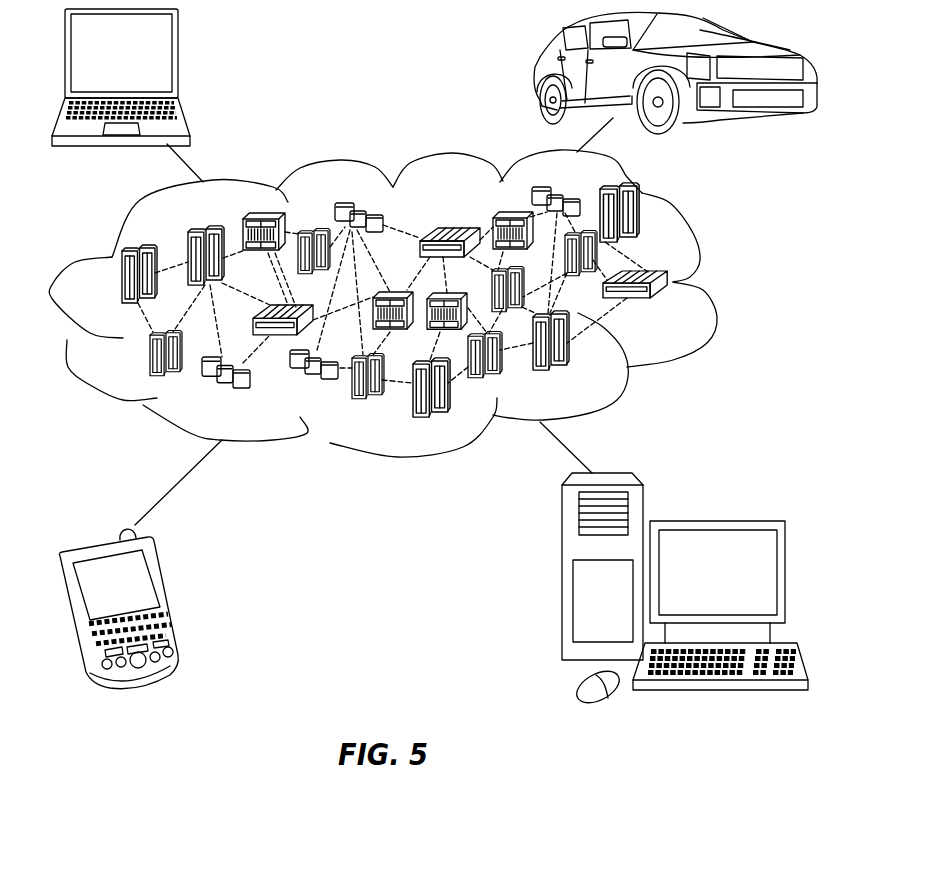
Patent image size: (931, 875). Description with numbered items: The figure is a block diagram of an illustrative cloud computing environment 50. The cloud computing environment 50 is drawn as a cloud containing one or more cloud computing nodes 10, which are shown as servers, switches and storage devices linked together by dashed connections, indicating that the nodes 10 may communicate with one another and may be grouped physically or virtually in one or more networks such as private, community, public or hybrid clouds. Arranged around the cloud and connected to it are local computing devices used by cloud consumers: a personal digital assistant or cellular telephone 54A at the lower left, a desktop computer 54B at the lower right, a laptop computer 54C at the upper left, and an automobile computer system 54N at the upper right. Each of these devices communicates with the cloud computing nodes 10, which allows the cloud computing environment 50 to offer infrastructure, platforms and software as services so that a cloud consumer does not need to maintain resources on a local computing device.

The cloud computing nodes 10 is at (672, 309).
The cloud computing environment 50 is at (717, 282).
The personal digital assistant (PDA) or cellular telephone 54A is at (170, 595).
The desktop computer 54B is at (715, 521).
The laptop computer 54C is at (178, 58).
The automobile computer system 54N is at (537, 72).